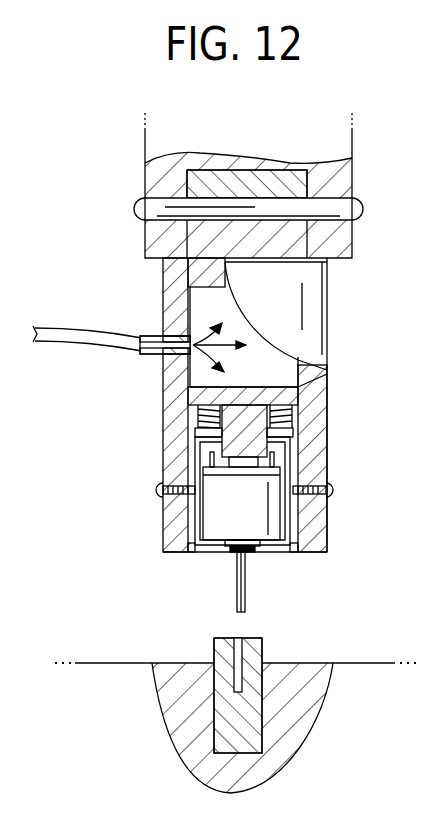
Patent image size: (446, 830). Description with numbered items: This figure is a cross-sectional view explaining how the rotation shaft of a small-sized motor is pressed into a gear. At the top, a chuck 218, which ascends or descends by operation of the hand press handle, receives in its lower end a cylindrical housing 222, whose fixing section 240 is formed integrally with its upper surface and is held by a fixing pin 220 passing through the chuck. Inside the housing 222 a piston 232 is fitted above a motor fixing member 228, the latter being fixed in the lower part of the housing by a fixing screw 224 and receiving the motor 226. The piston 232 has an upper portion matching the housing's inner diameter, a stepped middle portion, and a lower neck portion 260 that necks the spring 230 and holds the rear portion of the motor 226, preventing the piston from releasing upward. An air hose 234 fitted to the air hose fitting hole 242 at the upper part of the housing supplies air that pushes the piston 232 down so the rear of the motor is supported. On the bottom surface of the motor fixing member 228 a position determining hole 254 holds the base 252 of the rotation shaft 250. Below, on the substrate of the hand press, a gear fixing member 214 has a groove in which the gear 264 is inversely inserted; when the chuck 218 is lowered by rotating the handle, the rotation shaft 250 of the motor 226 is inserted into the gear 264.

The gear fixing member 214 is at (105, 677).
The chuck 218 is at (155, 137).
The fixing pin 220 is at (145, 190).
The cylindrical housing 222 is at (340, 315).
The fixing screw 224 is at (150, 490).
The motor 226 is at (215, 517).
The motor fixing member 228 is at (292, 527).
The spring 230 is at (293, 420).
The piston 232 is at (293, 395).
The inlet pipe 234 is at (90, 332).
The fixing section 240 is at (292, 183).
The air hose fitting hole 242 is at (156, 348).
The rotation shaft 250 is at (238, 597).
The base 252 is at (252, 552).
The position determining hole 254 is at (233, 564).
The neck portion 260 is at (292, 458).
The gear 264 is at (258, 655).